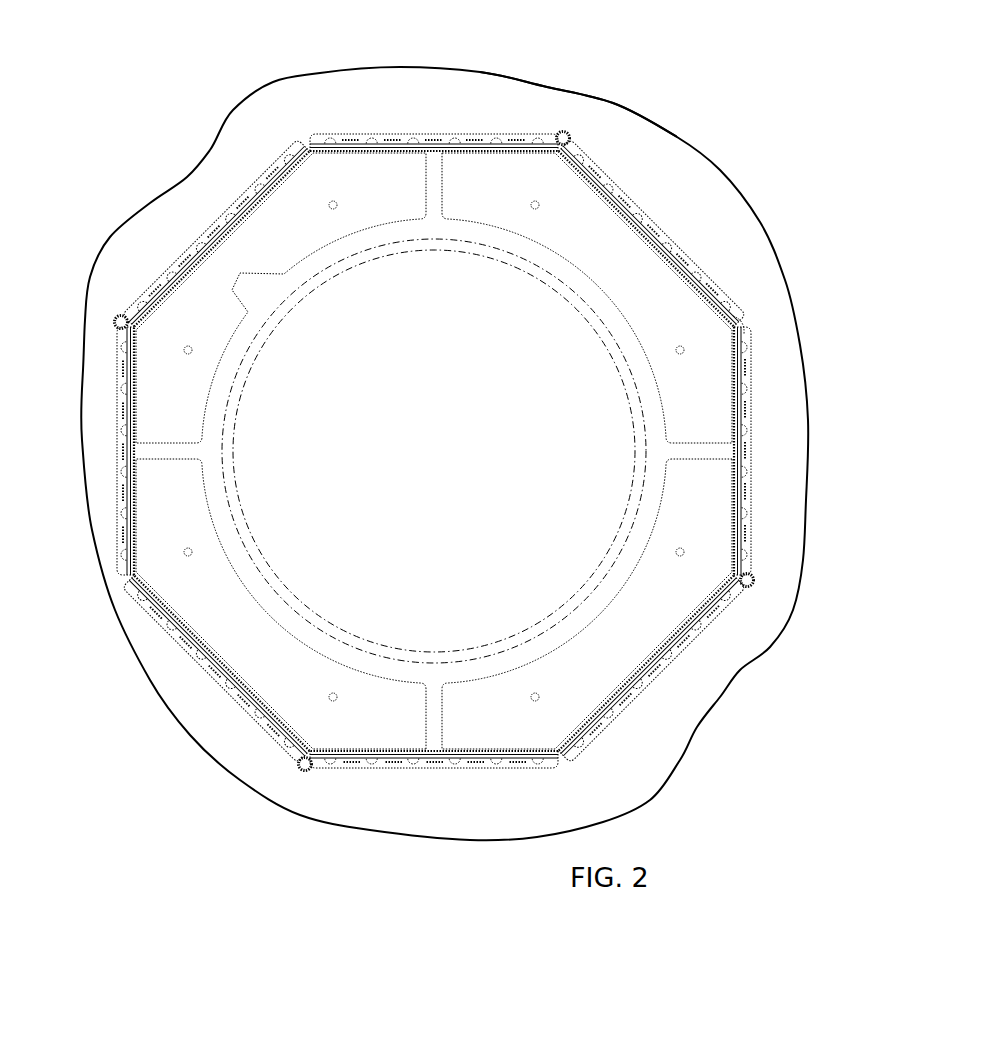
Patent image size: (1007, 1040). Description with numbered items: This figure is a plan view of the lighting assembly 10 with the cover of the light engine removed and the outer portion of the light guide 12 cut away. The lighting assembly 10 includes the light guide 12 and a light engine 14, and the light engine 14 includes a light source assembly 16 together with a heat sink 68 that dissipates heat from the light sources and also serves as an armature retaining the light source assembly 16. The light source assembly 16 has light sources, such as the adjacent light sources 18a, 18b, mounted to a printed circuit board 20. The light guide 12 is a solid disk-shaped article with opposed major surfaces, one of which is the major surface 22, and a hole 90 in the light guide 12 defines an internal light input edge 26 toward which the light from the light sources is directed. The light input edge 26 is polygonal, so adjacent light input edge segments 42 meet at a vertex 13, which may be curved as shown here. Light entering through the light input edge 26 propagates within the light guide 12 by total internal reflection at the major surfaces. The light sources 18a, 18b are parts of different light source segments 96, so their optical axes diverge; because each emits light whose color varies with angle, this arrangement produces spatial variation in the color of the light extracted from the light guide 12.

The lighting assembly 10 is at (278, 56).
The light guide 12 is at (542, 93).
The major surface 22 is at (590, 115).
The light engine 14 is at (432, 765).
The light source assembly 16 is at (622, 194).
The light source segment 96 is at (650, 220).
The printed circuit board 20 is at (650, 238).
The light source 18a is at (730, 298).
The light source 18b is at (740, 347).
The vertex 13 is at (745, 322).
The light input edge segment 42 is at (683, 263).
The heat sink 68 is at (365, 212).
The light input edge 26 is at (212, 228).
The hole 90 is at (446, 453).